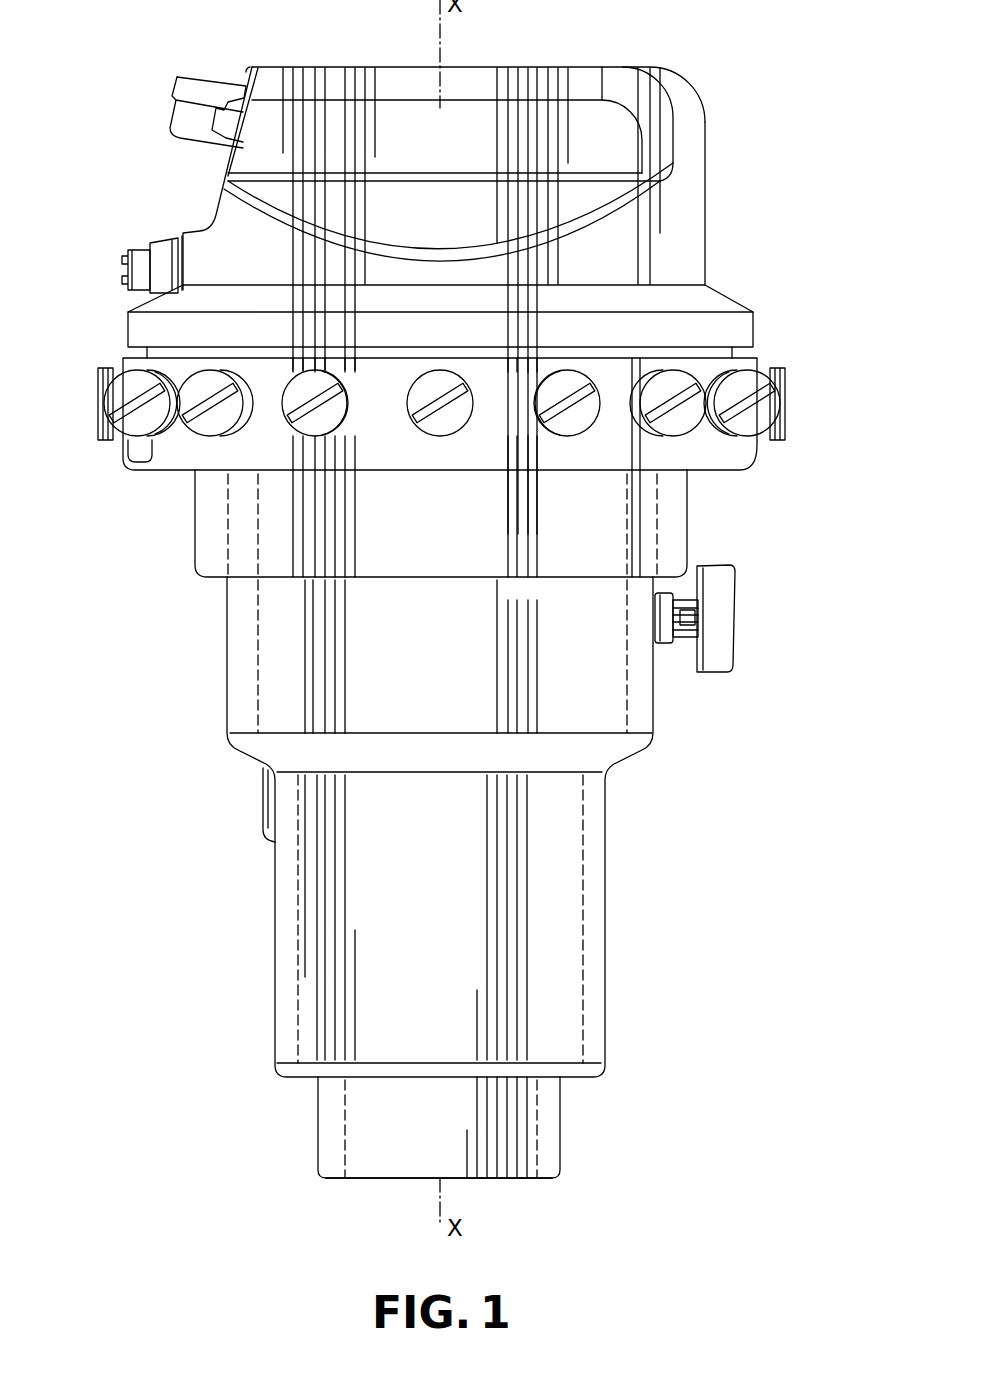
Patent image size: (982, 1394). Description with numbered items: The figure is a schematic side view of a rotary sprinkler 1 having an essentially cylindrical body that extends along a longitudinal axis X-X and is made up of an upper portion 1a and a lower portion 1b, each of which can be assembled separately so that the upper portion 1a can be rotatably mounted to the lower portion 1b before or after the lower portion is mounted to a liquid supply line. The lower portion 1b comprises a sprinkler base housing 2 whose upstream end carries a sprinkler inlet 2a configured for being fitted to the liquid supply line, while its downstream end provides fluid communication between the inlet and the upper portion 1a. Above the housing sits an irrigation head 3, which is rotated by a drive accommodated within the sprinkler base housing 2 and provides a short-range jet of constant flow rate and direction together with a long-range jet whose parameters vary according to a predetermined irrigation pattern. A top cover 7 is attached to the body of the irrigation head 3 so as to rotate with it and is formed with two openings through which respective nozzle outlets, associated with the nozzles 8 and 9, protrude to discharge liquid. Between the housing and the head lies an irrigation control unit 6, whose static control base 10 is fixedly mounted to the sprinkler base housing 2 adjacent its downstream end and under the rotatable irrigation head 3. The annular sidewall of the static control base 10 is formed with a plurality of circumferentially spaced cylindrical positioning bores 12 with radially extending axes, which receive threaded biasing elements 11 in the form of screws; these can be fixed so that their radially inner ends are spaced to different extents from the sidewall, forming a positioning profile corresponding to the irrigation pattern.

The rotary sprinkler 1 is at (92, 611).
The upper portion 1a is at (753, 127).
The lower portion 1b is at (674, 774).
The sprinkler base housing 2 is at (283, 925).
The sprinkler inlet 2a is at (388, 1180).
The irrigation head 3 is at (736, 223).
The irrigation control unit 6 is at (775, 317).
The top cover 7 is at (690, 100).
The locking element 8 is at (128, 287).
The handle pivot lever 9 is at (255, 72).
The static control base 10 is at (730, 460).
The biasing elements 11 is at (100, 393).
The positioning bores 12 is at (128, 458).